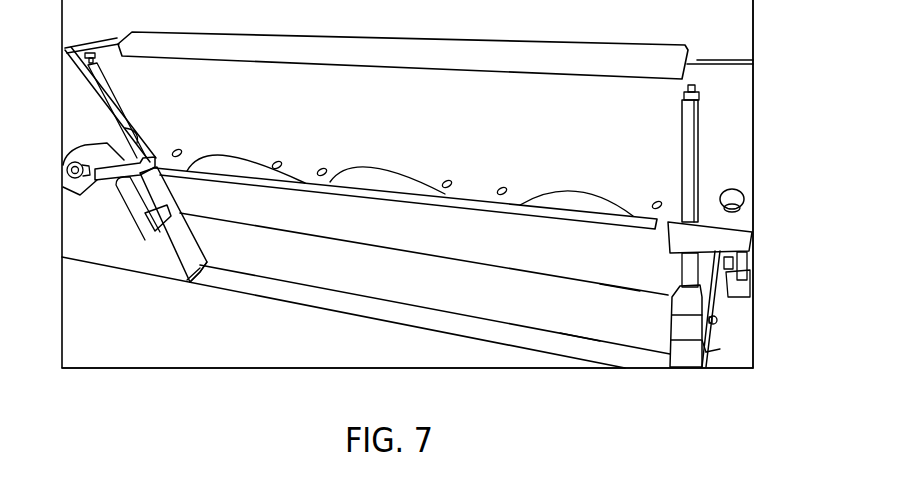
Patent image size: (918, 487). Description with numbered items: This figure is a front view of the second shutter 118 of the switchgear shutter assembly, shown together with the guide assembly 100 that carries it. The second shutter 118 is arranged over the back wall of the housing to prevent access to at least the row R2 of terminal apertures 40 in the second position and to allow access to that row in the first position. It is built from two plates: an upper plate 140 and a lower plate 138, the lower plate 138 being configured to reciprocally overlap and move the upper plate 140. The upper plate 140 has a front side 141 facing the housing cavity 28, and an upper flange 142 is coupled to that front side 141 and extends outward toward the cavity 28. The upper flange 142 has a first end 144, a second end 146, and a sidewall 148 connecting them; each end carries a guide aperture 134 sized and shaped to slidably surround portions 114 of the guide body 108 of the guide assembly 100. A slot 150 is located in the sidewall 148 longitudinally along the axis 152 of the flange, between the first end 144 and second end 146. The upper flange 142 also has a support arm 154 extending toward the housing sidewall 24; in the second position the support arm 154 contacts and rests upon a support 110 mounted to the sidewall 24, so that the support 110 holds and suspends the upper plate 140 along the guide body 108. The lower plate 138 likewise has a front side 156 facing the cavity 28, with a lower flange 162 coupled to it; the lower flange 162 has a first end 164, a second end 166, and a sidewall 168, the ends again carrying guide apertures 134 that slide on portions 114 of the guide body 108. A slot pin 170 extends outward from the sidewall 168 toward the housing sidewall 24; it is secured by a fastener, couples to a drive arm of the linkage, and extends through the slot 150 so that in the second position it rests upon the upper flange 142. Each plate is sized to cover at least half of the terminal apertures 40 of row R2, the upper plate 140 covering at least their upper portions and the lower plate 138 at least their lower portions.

The sidewall 24 is at (752, 224).
The cavity 28 is at (88, 358).
The terminal aperture 40 is at (207, 153).
The row of terminal apertures R2 is at (194, 150).
The guide assembly 100 is at (714, 122).
The guide body 108 is at (690, 152).
The support 110 is at (748, 276).
The portions of guide body 114 is at (746, 196).
The second shutter 118 is at (478, 266).
The guide aperture 134 is at (739, 213).
The lower plate 138 is at (592, 328).
The upper plate 140 is at (620, 268).
The front side 141 is at (557, 258).
The upper flange 142 is at (63, 154).
The first end 144 is at (148, 232).
The second end 146 is at (96, 198).
The sidewall 148 is at (172, 224).
The slot 150 is at (125, 202).
The axis 152 is at (145, 195).
The support arm 154 is at (722, 280).
The front side 156 is at (415, 290).
The lower flange 162 is at (690, 370).
The first end 164 is at (197, 286).
The second end 166 is at (688, 362).
The sidewall 168 is at (714, 356).
The slot pin 170 is at (708, 352).